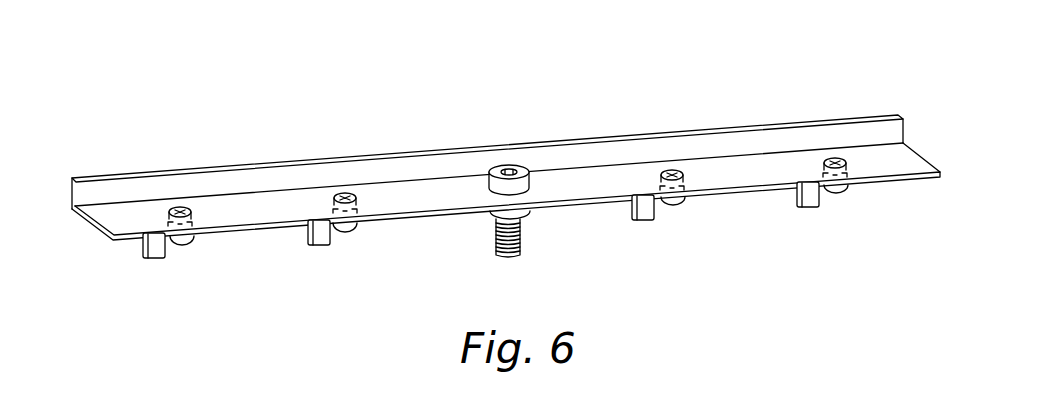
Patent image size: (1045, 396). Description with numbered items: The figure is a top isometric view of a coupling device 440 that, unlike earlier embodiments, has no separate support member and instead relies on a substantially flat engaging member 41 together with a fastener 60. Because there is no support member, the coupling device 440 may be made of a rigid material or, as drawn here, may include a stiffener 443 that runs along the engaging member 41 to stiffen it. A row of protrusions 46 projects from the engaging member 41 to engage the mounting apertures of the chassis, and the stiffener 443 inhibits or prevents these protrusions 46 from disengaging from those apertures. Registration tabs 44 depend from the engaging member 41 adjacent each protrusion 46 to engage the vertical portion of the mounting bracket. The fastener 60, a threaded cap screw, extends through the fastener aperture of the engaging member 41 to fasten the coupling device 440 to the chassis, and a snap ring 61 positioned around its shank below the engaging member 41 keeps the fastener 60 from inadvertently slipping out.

The coupling device 440 is at (506, 171).
The stiffener 443 is at (155, 171).
The engaging member 41 is at (88, 223).
The registration tabs 44 is at (317, 245).
The protrusions 46 is at (183, 244).
The fastener 60 is at (515, 167).
The snap ring 61 is at (529, 214).